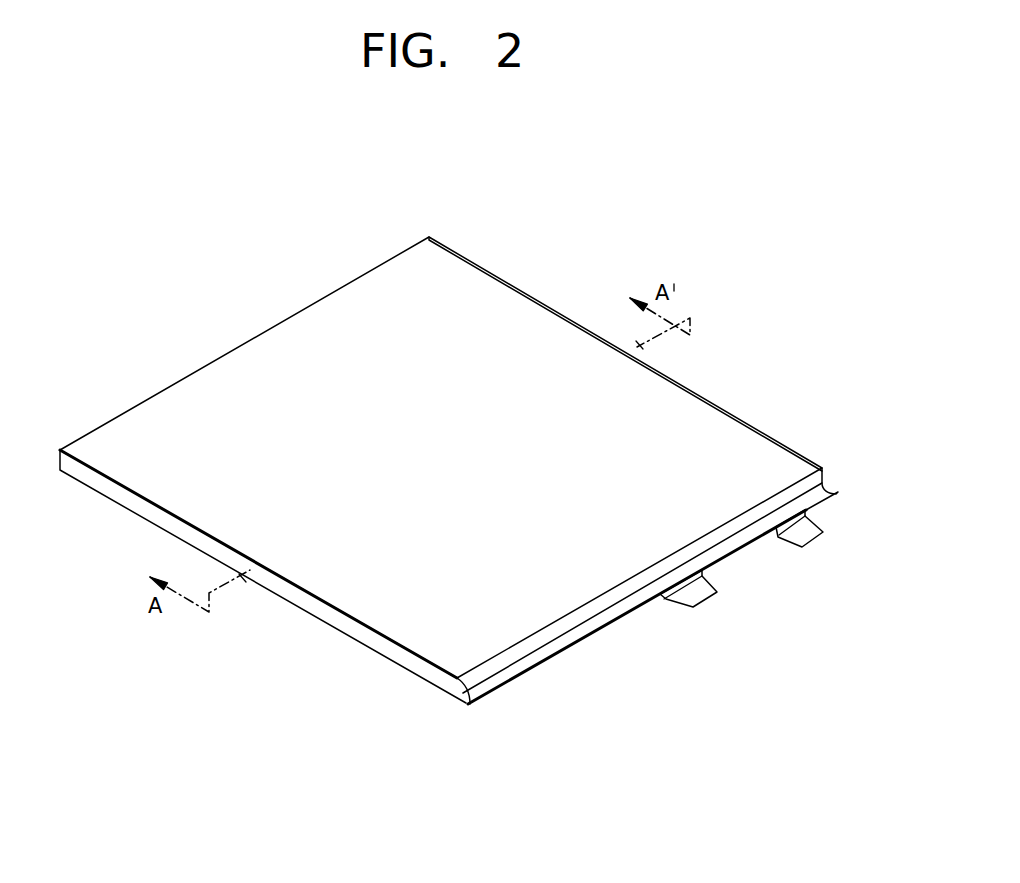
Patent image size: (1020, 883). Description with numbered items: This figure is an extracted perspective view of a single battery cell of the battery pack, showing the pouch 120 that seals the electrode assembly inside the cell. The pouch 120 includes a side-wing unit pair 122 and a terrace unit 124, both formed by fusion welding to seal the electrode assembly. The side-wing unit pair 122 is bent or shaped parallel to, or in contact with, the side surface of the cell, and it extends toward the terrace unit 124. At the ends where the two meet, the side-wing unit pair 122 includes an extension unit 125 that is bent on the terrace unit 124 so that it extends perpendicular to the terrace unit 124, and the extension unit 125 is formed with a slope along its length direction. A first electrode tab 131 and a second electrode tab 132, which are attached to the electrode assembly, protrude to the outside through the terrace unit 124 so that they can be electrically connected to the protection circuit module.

The pouch 120 is at (248, 373).
The side-wing unit pair 122 is at (545, 302).
The terrace unit 124 is at (558, 647).
The extension unit 125 is at (458, 690).
The first electrode tab 131 is at (806, 536).
The second electrode tab 132 is at (700, 594).